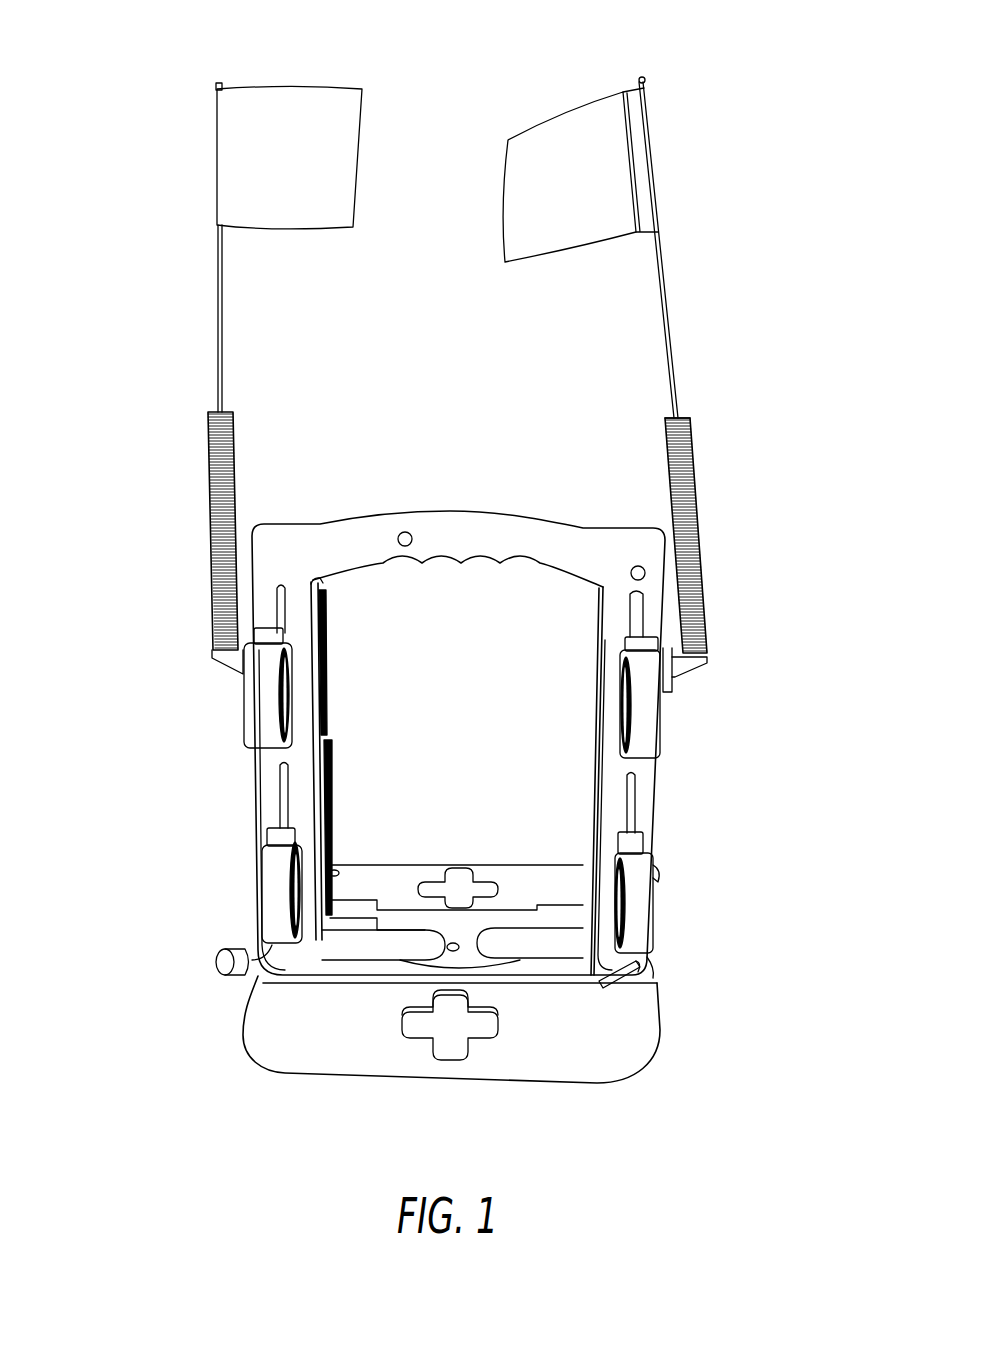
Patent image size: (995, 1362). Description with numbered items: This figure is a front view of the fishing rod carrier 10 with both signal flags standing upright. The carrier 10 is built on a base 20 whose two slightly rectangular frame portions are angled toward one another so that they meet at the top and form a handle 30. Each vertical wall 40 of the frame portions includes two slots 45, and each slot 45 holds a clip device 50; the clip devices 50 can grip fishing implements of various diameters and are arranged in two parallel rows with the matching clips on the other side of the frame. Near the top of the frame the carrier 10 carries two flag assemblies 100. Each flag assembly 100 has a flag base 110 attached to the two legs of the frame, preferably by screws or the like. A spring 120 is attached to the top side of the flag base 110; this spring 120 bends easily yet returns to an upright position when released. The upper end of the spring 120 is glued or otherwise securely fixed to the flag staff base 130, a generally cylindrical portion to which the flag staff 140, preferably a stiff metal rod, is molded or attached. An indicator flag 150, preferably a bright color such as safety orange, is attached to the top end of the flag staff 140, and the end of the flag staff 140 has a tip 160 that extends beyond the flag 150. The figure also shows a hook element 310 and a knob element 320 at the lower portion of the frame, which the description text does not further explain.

The fishing rod carrier 10 is at (126, 356).
The base 20 is at (255, 980).
The handle 30 is at (437, 520).
The vertical wall 40 is at (613, 718).
The slots 45 is at (624, 805).
The clip device 50 is at (260, 853).
The flag assembly 100 is at (740, 474).
The flag base 110 is at (707, 662).
The spring 120 is at (672, 481).
The flag staff base 130 is at (679, 416).
The flag staff 140 is at (670, 290).
The indicator flag 150 is at (650, 145).
The tip 160 is at (650, 78).
The hook 310 is at (645, 983).
The knob 320 is at (235, 948).